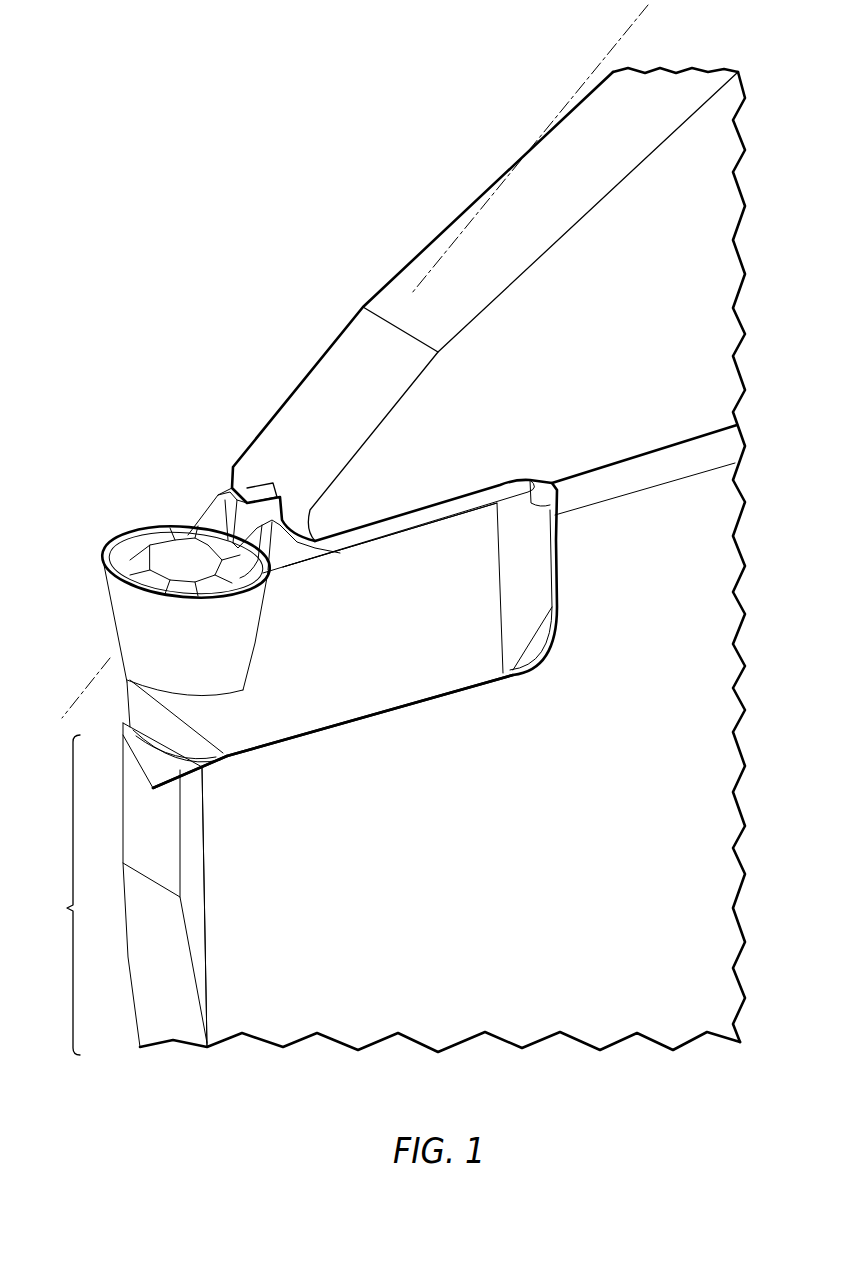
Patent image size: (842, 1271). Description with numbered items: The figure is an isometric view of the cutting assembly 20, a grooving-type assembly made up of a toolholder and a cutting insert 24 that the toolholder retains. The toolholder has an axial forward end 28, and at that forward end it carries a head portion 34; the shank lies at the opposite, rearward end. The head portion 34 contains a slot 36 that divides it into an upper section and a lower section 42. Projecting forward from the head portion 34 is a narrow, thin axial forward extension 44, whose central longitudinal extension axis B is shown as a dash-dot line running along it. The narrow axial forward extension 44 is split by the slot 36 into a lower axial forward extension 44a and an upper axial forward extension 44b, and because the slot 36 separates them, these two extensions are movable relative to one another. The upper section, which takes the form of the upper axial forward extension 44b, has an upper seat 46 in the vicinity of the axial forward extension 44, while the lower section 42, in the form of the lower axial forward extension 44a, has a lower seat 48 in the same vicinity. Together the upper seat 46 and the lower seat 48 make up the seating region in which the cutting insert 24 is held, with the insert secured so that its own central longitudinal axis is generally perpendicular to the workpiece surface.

The cutting assembly 20 is at (237, 153).
The central longitudinal extension axis B is at (604, 62).
The cutting insert 24 is at (84, 580).
The axial forward end 28 is at (113, 801).
The head portion 34 is at (335, 984).
The slot 36 is at (636, 488).
The lower section 42 is at (62, 895).
The narrow axial forward extension 44 is at (375, 964).
The lower axial forward extension 44a is at (258, 907).
The upper axial forward extension 44b is at (373, 464).
The upper seat 46 is at (425, 510).
The lower seat 48 is at (370, 708).